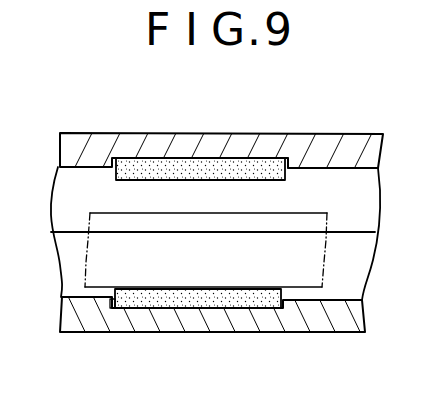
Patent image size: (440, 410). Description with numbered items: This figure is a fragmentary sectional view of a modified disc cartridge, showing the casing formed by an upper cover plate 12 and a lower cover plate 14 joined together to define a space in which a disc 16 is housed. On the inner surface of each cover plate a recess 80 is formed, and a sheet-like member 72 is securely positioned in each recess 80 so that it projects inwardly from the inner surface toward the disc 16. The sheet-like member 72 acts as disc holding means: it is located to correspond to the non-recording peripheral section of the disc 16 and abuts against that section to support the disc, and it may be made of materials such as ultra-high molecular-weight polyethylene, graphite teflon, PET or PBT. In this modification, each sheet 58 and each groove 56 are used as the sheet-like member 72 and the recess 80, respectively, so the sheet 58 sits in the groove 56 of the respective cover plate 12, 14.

The upper cover plate 12 is at (368, 142).
The lower cover plate 14 is at (313, 323).
The disc 16 is at (90, 213).
The groove 56 is at (108, 308).
The sheet 58 is at (195, 305).
The sheet-like member 72 is at (124, 190).
The recess 80 is at (297, 163).